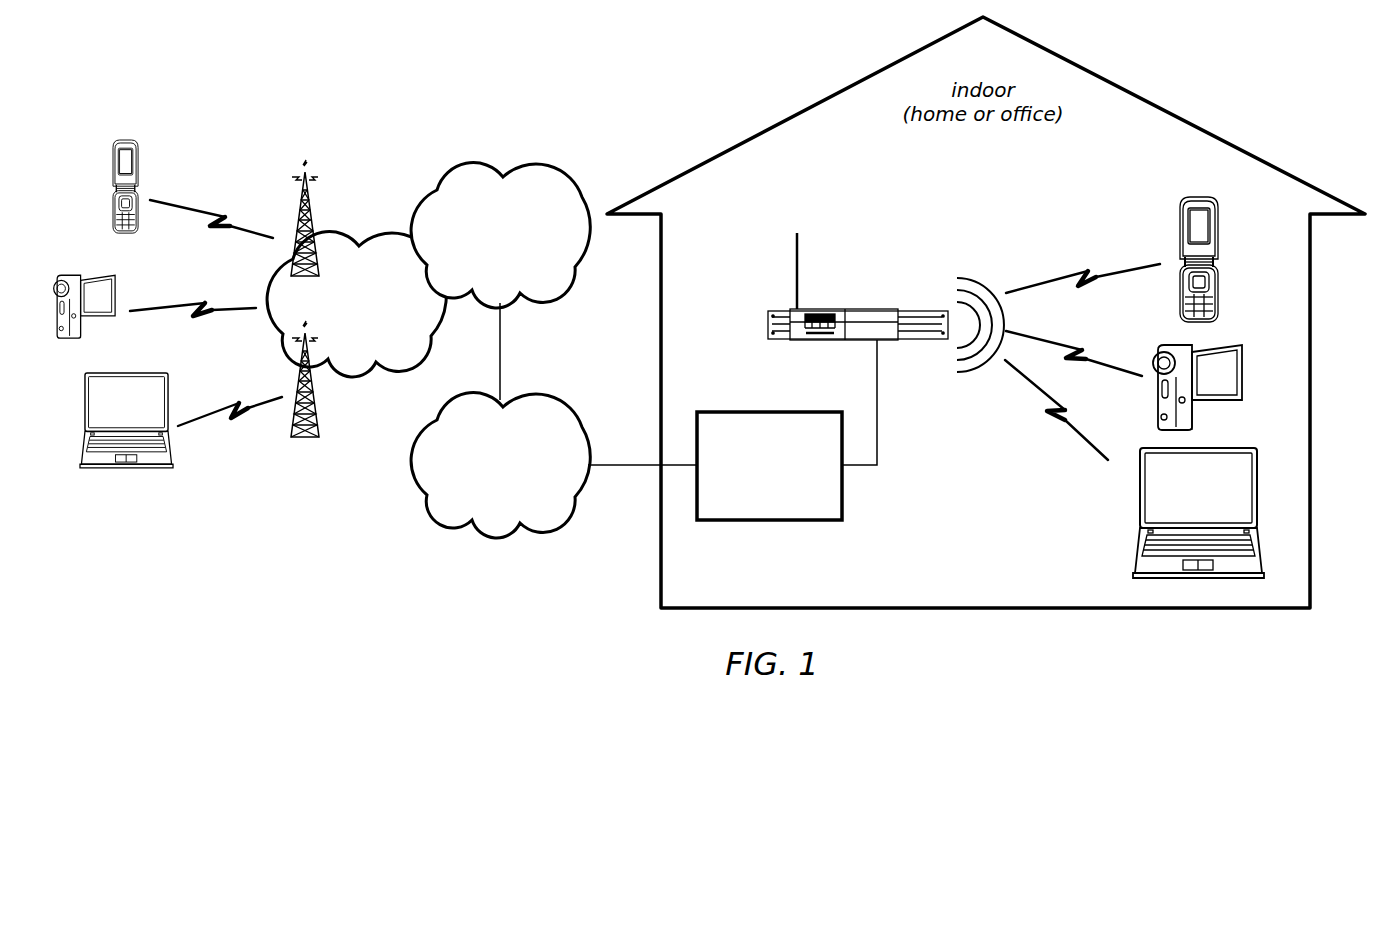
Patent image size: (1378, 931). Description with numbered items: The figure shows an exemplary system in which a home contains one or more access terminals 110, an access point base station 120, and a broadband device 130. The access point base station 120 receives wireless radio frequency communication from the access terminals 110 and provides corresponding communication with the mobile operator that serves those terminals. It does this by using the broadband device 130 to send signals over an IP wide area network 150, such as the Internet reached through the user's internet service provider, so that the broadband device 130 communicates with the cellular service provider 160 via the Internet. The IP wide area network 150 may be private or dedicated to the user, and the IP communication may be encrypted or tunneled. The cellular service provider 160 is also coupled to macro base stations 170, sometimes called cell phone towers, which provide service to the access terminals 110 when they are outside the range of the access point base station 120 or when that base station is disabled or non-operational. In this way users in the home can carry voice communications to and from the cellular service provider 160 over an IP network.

The access terminals 110 is at (150, 129).
The access point base station 120 is at (852, 309).
The broadband device 130 is at (769, 466).
The IP wide area network 150 is at (500, 465).
The cellular service provider 160 is at (500, 235).
The macro base stations 170 is at (356, 298).